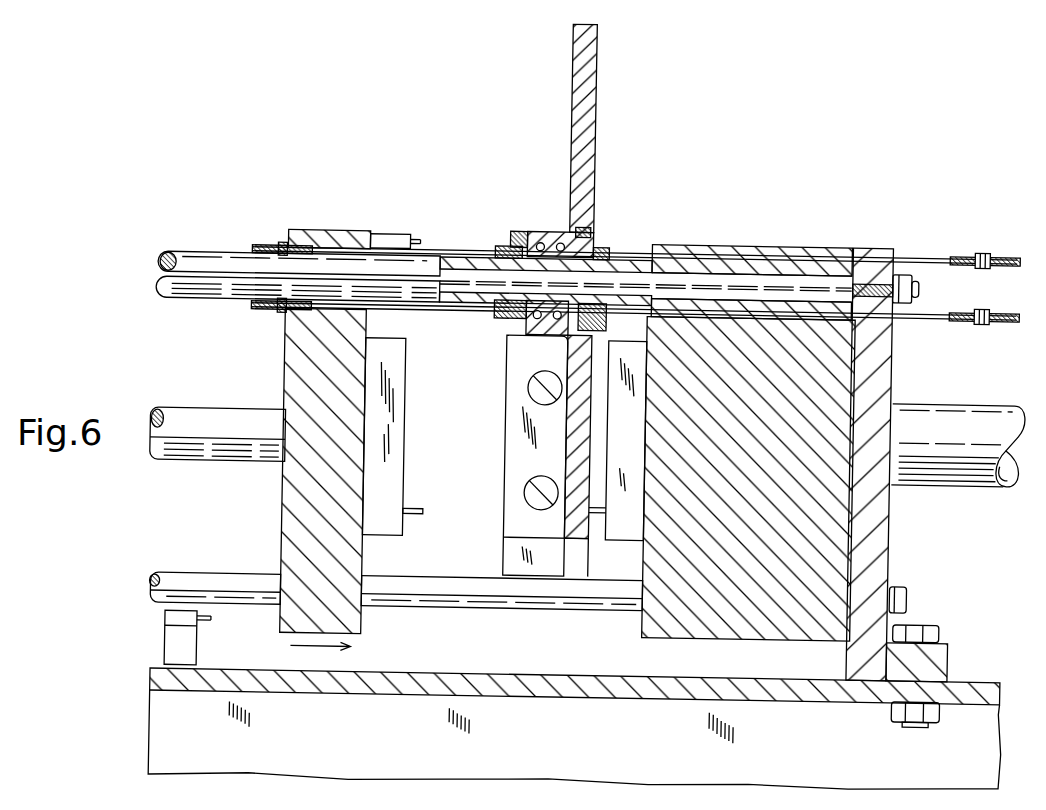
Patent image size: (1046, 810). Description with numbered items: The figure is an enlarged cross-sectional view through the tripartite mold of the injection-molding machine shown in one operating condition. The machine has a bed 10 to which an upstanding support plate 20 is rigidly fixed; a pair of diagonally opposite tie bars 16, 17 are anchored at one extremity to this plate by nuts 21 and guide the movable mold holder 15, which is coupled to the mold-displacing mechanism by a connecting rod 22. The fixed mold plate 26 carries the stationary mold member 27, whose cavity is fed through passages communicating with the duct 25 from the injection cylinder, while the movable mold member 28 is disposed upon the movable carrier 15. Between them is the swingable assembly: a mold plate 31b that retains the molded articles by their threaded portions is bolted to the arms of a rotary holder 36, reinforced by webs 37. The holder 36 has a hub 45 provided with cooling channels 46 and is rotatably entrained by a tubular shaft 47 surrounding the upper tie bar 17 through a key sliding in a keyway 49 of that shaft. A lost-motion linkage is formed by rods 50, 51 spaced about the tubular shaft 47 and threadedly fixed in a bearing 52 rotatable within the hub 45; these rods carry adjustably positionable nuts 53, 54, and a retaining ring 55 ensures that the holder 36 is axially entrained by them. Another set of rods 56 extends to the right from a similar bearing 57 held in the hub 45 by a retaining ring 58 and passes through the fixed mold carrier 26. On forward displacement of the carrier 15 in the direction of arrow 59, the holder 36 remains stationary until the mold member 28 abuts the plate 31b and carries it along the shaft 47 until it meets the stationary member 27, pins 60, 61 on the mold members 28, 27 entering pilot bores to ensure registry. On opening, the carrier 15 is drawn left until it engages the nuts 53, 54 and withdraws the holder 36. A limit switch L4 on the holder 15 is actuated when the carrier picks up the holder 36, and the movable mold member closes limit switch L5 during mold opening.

The bed 10 is at (975, 666).
The movable mold holder 15 is at (320, 227).
The tie bar 16 is at (419, 602).
The upper tie bar 17 is at (783, 264).
The support plate 20 is at (888, 515).
The nut 21 is at (905, 270).
The connecting rod 22 is at (200, 407).
The duct 25 is at (953, 391).
The fixed mold plate 26 is at (715, 237).
The mold member 27 is at (628, 424).
The movable mold member 28 is at (396, 438).
The mold plate 31b is at (509, 491).
The rotary holder 36 is at (600, 330).
The web 37 is at (587, 103).
The hub 45 is at (540, 225).
The cooling channel 46 is at (534, 311).
The tubular shaft 47 is at (183, 251).
The keyway 49 is at (183, 289).
The rod 50 is at (433, 253).
The rod 51 is at (394, 297).
The bearing 52 is at (506, 309).
The adjustable nut 53 is at (276, 241).
The adjustable nut 54 is at (274, 303).
The retaining ring 55 is at (505, 229).
The rod 56 is at (993, 243).
The bearing 57 is at (591, 242).
The retaining ring 58 is at (575, 229).
The arrow 59 is at (320, 644).
The pin 60 is at (417, 509).
The pin 61 is at (594, 499).
The limit switch L4 is at (377, 229).
The limit switch L5 is at (164, 622).